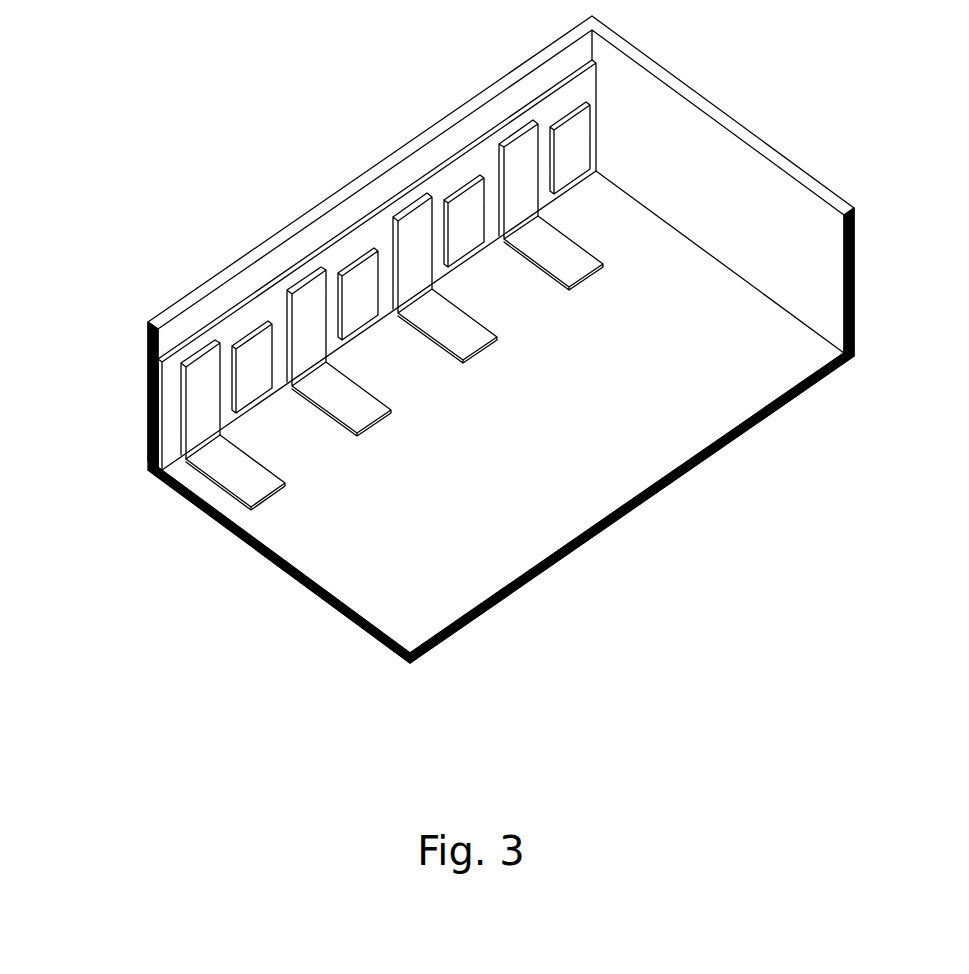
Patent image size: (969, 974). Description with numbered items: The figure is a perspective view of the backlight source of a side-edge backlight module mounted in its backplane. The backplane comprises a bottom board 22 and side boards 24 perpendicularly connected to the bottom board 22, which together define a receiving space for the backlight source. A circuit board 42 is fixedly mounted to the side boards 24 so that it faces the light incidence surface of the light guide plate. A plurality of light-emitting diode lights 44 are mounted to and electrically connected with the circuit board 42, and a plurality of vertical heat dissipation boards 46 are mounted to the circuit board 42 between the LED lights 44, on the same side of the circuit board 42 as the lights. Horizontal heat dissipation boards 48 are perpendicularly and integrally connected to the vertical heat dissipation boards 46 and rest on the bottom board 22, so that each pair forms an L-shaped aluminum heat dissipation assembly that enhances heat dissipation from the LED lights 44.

The bottom board 22 is at (372, 547).
The side board 24 is at (423, 142).
The circuit board 42 is at (338, 238).
The light-emitting diode light 44 is at (258, 348).
The vertical heat dissipation board 46 is at (192, 385).
The horizontal heat dissipation board 48 is at (232, 472).